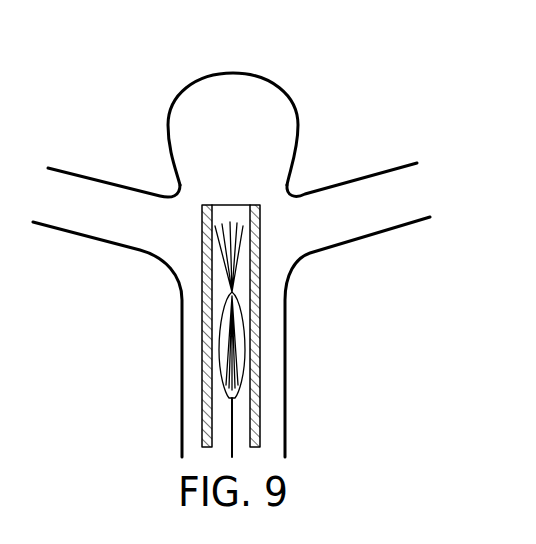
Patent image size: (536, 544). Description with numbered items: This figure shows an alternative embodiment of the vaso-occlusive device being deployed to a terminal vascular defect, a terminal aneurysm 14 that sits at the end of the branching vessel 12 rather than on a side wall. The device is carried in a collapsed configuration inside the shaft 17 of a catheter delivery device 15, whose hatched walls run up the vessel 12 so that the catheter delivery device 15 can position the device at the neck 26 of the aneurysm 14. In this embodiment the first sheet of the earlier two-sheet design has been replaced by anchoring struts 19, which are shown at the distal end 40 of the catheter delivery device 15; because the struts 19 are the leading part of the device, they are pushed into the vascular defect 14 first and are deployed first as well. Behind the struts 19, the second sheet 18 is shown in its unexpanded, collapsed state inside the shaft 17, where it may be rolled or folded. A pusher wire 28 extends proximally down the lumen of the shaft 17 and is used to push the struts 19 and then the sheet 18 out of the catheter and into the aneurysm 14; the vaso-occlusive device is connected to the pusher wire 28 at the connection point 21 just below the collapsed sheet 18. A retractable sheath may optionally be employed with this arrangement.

The vessel 12 is at (102, 240).
The aneurysm 14 is at (220, 73).
The neck 26 is at (223, 193).
The distal end 40 is at (245, 197).
The catheter delivery device 15 is at (265, 360).
The anchoring struts 19 is at (237, 240).
The sheet 18 is at (242, 313).
The connection 21 is at (233, 398).
The pusher wire 28 is at (250, 436).
The shaft 17 is at (201, 421).